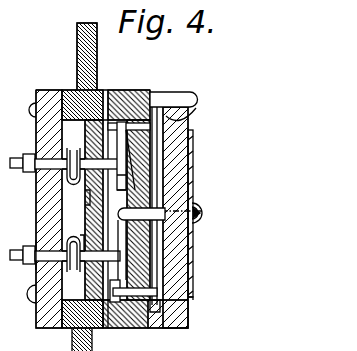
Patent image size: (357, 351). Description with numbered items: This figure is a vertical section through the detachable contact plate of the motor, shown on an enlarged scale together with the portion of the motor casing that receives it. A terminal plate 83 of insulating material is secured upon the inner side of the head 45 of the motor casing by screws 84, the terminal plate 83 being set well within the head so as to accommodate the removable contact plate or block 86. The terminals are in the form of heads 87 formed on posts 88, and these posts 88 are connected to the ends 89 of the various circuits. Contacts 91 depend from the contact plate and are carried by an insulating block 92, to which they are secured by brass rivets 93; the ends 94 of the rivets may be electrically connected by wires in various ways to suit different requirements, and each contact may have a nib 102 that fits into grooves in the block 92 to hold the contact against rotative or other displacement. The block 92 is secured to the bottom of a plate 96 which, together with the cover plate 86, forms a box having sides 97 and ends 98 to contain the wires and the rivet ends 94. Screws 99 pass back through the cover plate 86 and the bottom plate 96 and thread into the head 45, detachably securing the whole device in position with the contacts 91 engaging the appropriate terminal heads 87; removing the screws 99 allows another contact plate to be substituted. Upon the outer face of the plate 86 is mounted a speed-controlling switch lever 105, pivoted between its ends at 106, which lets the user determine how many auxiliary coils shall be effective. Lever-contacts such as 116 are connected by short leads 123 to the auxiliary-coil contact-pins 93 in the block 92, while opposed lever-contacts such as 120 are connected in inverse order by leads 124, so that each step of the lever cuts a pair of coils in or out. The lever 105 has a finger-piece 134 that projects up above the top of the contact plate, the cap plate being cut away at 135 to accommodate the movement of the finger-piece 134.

The head 45 is at (77, 57).
The terminal plate 83 is at (41, 91).
The screws 84 is at (30, 109).
The contact plate 86 is at (134, 90).
The heads 87 is at (67, 157).
The posts 88 is at (23, 261).
The ends 89 is at (25, 246).
The contacts 91 is at (62, 176).
The insulating block 92 is at (86, 198).
The brass rivets 93 is at (83, 228).
The ends 94 is at (122, 182).
The plate 96 is at (107, 90).
The sides 97 is at (120, 89).
The ends 98 is at (138, 244).
The screws 99 is at (200, 208).
The nib 102 is at (76, 212).
The speed-controlling switch lever 105 is at (174, 86).
The pivot 106 is at (190, 180).
The lever-contact 116 is at (178, 122).
The lever-contact 120 is at (186, 301).
The leads 123 is at (123, 148).
The leads 124 is at (127, 266).
The finger-piece 134 is at (186, 93).
The cut-away 135 is at (197, 106).